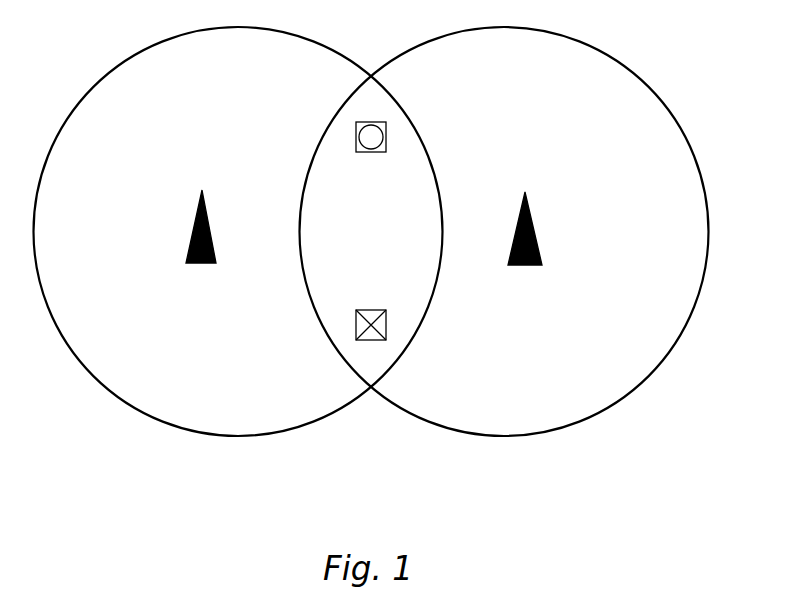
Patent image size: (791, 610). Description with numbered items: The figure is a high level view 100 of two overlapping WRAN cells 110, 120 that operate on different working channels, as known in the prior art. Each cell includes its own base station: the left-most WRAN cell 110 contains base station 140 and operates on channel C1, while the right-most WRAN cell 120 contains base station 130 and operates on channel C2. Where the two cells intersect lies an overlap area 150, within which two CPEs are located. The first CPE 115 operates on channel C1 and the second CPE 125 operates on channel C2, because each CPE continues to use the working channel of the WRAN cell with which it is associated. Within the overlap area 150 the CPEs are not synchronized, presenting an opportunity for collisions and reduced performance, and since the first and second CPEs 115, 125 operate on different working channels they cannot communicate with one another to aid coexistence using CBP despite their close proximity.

The high level view 100 is at (371, 270).
The WRAN cell 110 is at (135, 408).
The WRAN cell 120 is at (605, 410).
The base station 130 is at (529, 216).
The base station 140 is at (196, 215).
The overlap area 150 is at (396, 212).
The second CPE 125 is at (386, 141).
The first CPE 115 is at (386, 325).